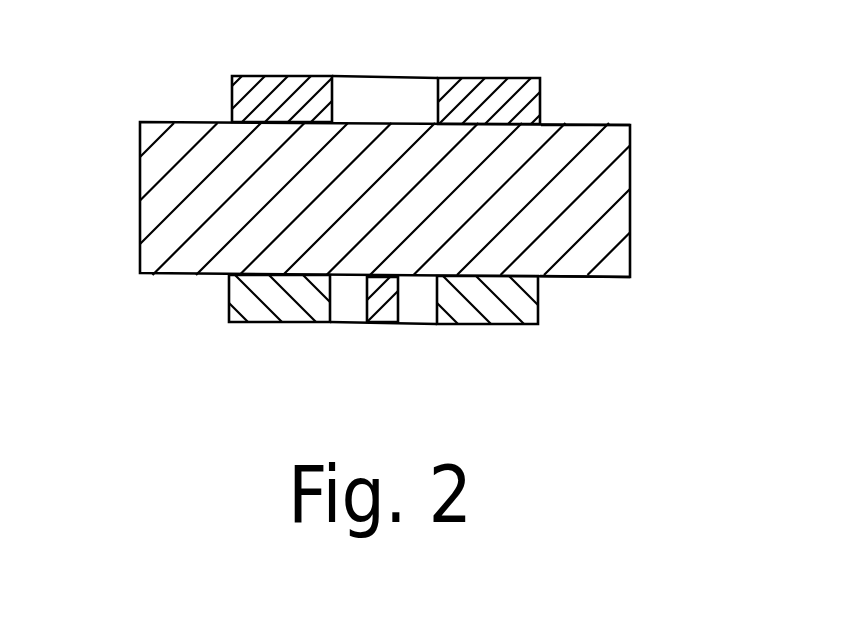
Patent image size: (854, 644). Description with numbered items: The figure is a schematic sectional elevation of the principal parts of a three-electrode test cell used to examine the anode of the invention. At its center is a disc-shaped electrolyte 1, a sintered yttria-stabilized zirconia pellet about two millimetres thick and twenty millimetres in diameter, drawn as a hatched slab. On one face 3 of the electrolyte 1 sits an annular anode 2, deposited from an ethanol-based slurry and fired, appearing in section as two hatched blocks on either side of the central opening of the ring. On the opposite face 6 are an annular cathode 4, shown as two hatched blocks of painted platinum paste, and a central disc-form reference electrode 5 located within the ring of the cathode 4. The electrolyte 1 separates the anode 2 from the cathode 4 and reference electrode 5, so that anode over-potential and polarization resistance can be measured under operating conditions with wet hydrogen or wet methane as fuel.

The electrolyte 1 is at (187, 213).
The anode 2 is at (543, 78).
The face 3 is at (590, 125).
The cathode 4 is at (498, 325).
The reference electrode 5 is at (383, 308).
The opposite face 6 is at (613, 278).